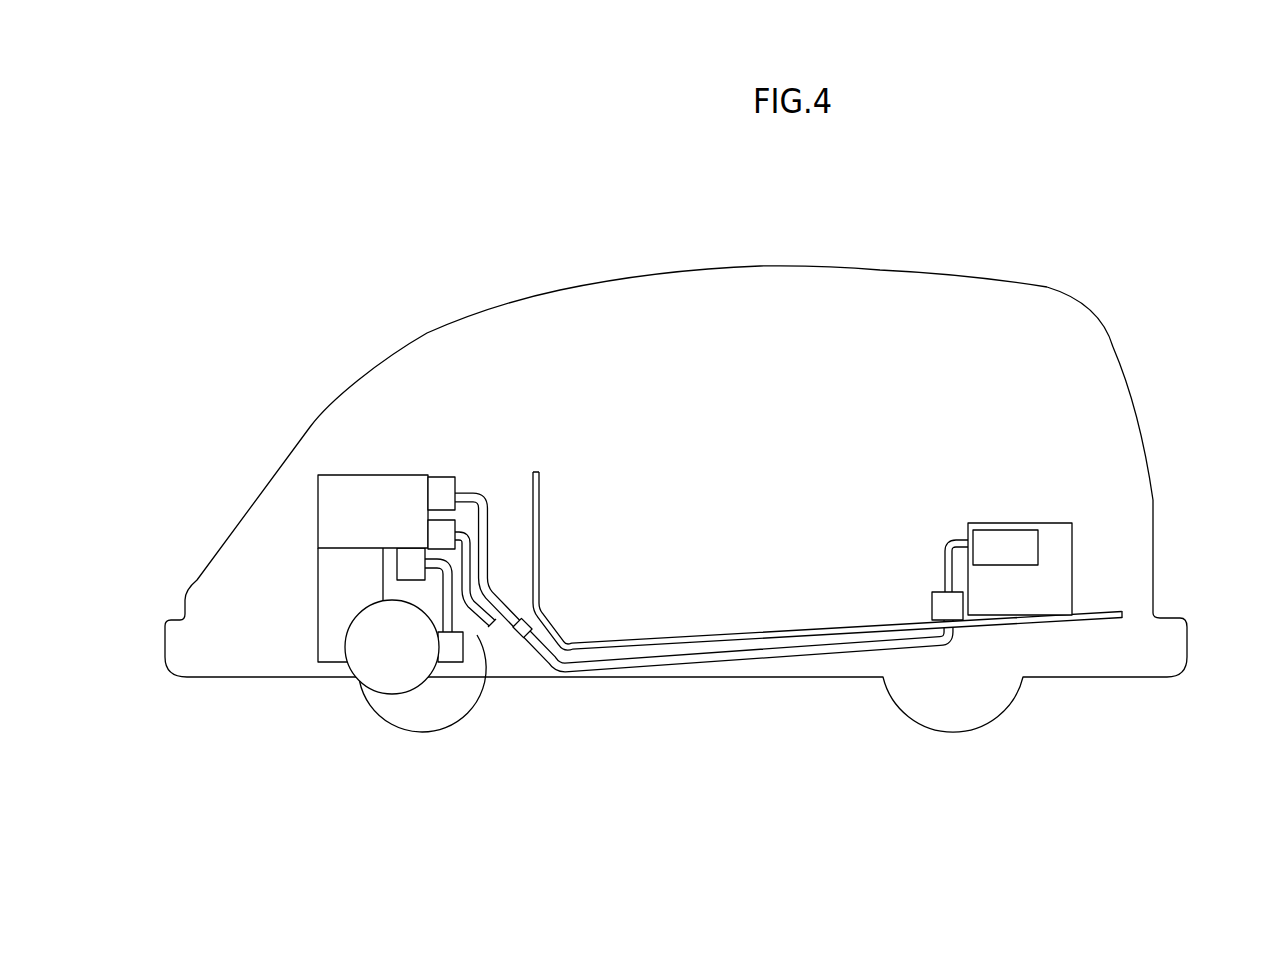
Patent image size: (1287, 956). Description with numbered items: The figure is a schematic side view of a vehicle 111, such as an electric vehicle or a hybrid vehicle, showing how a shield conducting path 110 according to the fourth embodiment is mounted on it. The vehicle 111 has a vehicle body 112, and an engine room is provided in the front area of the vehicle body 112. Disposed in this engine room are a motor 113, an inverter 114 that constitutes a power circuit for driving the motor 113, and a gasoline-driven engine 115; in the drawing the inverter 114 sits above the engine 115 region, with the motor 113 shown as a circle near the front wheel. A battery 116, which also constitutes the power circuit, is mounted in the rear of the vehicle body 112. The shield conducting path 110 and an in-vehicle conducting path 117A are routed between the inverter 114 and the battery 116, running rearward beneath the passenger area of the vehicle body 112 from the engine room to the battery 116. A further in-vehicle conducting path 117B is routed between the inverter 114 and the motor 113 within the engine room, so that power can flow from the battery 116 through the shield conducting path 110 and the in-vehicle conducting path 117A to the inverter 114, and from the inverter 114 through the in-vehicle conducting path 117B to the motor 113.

The shield conducting path 110 is at (743, 661).
The vehicle 111 is at (1018, 270).
The vehicle body 112 is at (1093, 308).
The motor 113 is at (393, 660).
The inverter 114 is at (360, 507).
The gasoline-driven engine 115 is at (332, 593).
The battery 116 is at (1062, 563).
The in-vehicle conducting path 117A is at (473, 607).
The in-vehicle conducting path 117B is at (450, 620).